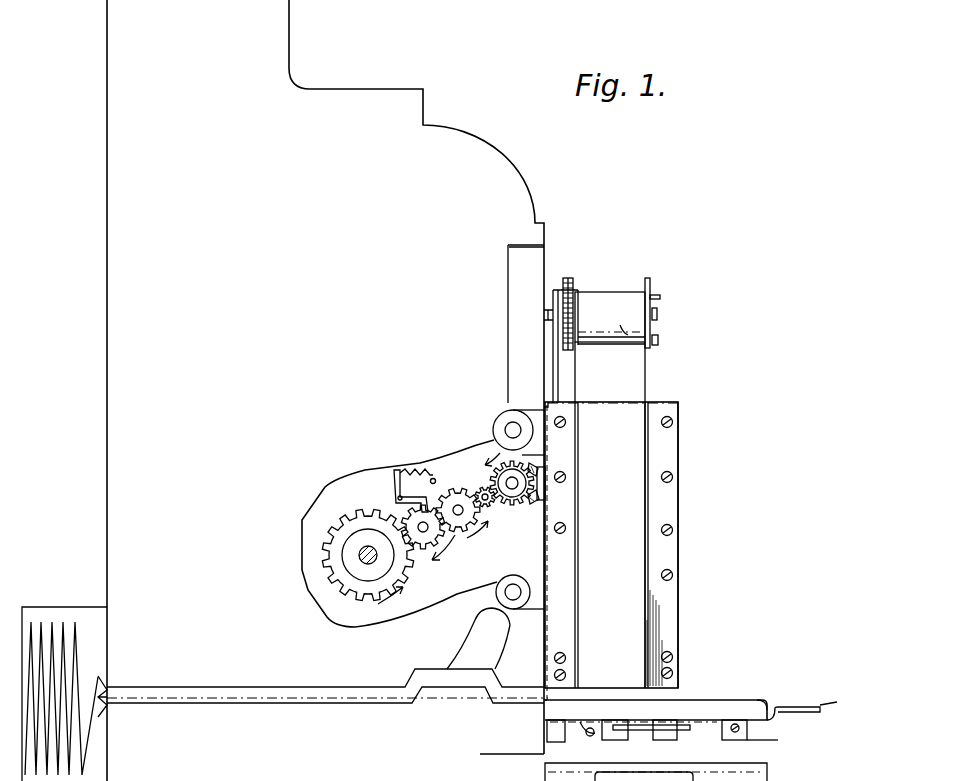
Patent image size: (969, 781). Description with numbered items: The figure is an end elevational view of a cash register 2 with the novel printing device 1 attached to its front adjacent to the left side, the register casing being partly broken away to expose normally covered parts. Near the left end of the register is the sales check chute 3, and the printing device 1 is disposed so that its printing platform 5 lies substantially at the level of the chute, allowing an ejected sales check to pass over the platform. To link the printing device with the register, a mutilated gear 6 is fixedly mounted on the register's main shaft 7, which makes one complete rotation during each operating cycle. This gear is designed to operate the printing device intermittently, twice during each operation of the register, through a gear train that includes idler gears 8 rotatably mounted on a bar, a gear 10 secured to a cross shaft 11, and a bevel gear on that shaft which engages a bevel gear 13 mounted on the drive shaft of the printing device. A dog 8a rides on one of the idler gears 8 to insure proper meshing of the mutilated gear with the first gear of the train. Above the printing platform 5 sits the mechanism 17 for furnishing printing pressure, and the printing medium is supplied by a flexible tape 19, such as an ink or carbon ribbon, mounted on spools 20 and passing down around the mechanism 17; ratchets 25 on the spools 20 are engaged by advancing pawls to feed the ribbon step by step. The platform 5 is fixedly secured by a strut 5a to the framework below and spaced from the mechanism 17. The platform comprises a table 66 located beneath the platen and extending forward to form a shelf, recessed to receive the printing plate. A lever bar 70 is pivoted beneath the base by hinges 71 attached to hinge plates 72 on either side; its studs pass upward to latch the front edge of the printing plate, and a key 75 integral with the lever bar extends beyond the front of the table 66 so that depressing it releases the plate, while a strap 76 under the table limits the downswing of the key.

The printing device 1 is at (673, 498).
The cash register 2 is at (481, 160).
The sales check chute 3 is at (232, 690).
The printing platform 5 is at (562, 708).
The strut 5a is at (658, 695).
The mutilated gear 6 is at (360, 535).
The main shaft 7 is at (358, 553).
The idler gears 8 is at (480, 488).
The dog 8a is at (393, 492).
The gear 10 is at (517, 507).
The cross shaft 11 is at (513, 478).
The bevel gear 13 is at (547, 502).
The mechanism for furnishing printing pressure 17 is at (678, 593).
The flexible tape 19 is at (620, 392).
The spools 20 is at (650, 280).
The ratchets 25 is at (572, 276).
The table 66 is at (747, 707).
The lever bar 70 is at (705, 727).
The hinges 71 is at (570, 743).
The hinge plates 72 is at (572, 775).
The key 75 is at (817, 716).
The strap 76 is at (783, 751).